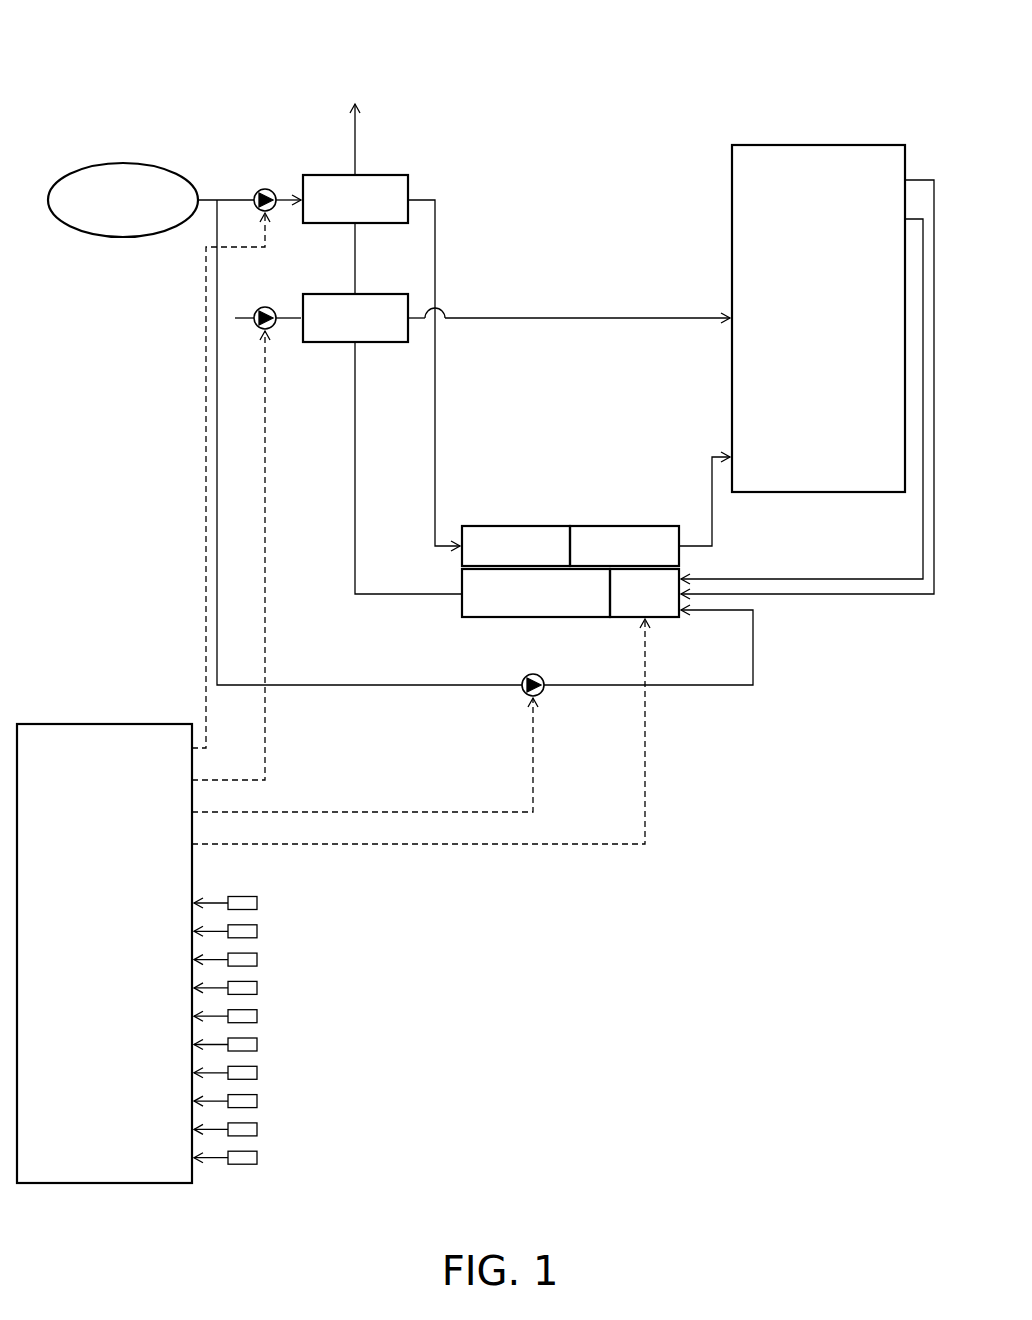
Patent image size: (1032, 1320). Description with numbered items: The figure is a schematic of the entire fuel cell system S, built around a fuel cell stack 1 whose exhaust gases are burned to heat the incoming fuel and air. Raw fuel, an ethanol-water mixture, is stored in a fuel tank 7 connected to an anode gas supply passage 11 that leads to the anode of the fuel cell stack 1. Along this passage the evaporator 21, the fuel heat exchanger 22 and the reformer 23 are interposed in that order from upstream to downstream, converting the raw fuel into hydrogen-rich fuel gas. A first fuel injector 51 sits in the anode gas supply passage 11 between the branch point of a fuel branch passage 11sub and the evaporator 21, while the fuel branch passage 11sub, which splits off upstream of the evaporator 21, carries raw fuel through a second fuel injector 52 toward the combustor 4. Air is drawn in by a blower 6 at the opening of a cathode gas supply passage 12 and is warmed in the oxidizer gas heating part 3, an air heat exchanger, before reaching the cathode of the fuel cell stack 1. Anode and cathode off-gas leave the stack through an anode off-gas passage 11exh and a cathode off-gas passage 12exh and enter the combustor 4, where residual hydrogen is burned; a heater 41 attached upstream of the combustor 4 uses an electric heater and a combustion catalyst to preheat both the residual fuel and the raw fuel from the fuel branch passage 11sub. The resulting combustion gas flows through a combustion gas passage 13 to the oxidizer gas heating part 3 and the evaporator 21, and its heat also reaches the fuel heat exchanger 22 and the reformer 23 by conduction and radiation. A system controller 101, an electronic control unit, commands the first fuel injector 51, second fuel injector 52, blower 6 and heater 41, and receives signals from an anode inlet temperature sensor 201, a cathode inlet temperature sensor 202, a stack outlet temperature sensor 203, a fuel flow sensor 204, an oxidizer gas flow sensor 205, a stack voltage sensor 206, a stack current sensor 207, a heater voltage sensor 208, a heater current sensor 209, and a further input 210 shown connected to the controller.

The fuel cell system S is at (643, 98).
The fuel cell stack 1 is at (853, 145).
The fuel tank 7 is at (118, 162).
The first fuel injector 51 is at (264, 189).
The evaporator 21 is at (325, 175).
The blower 6 is at (262, 307).
The oxidizer gas heating part 3 is at (325, 294).
The cathode gas supply passage 12 is at (555, 317).
The anode gas supply passage 11 is at (436, 419).
The combustion gas passage 13 is at (357, 480).
The fuel heat exchanger 22 is at (513, 526).
The reformer 23 is at (633, 526).
The combustor 4 is at (596, 618).
The heater 41 is at (661, 618).
The anode off-gas passage 11exh is at (822, 579).
The cathode off-gas passage 12exh is at (862, 595).
The fuel branch passage 11sub is at (370, 686).
The second fuel injector 52 is at (525, 700).
The system controller 101 is at (60, 724).
The anode inlet temperature sensor 201 is at (257, 899).
The cathode inlet temperature sensor 202 is at (257, 927).
The stack outlet temperature sensor 203 is at (257, 956).
The fuel flow sensor 204 is at (257, 984).
The oxidizer gas flow sensor 205 is at (257, 1012).
The stack voltage sensor 206 is at (257, 1040).
The stack current sensor 207 is at (257, 1069).
The heater voltage sensor 208 is at (257, 1097).
The heater current sensor 209 is at (257, 1125).
The sensor 210 is at (257, 1154).